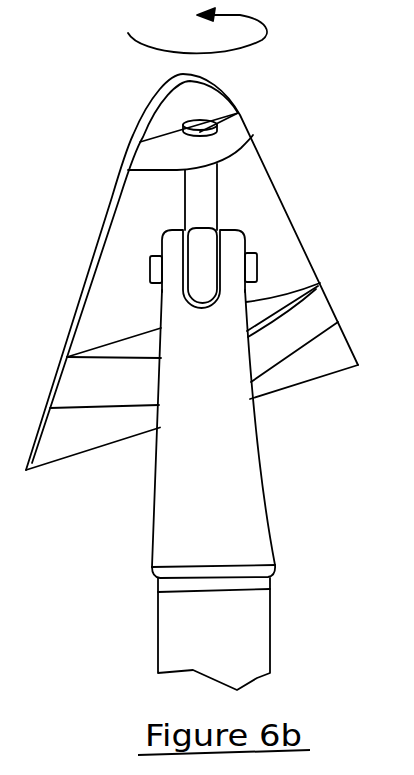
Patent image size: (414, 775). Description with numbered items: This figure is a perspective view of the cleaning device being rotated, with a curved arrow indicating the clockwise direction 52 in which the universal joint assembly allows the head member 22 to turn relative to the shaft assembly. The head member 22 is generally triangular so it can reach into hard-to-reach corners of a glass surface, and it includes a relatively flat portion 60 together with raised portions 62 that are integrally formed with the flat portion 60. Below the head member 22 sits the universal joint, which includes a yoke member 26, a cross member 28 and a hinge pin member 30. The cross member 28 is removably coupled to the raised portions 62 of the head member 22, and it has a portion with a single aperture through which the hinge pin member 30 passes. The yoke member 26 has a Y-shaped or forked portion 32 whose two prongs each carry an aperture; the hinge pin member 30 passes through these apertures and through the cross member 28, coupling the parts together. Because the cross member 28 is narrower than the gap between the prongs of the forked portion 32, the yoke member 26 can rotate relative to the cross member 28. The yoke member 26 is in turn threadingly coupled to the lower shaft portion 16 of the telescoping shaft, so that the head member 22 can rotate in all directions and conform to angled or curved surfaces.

The clockwise direction 52 is at (270, 32).
The raised portions 62 is at (137, 163).
The flat portion 60 is at (118, 222).
The cross member 28 is at (197, 197).
The head member 22 is at (284, 208).
The hinge pin member 30 is at (148, 270).
The forked portion 32 is at (320, 283).
The yoke member 26 is at (268, 498).
The lower shaft portion 16 is at (271, 622).